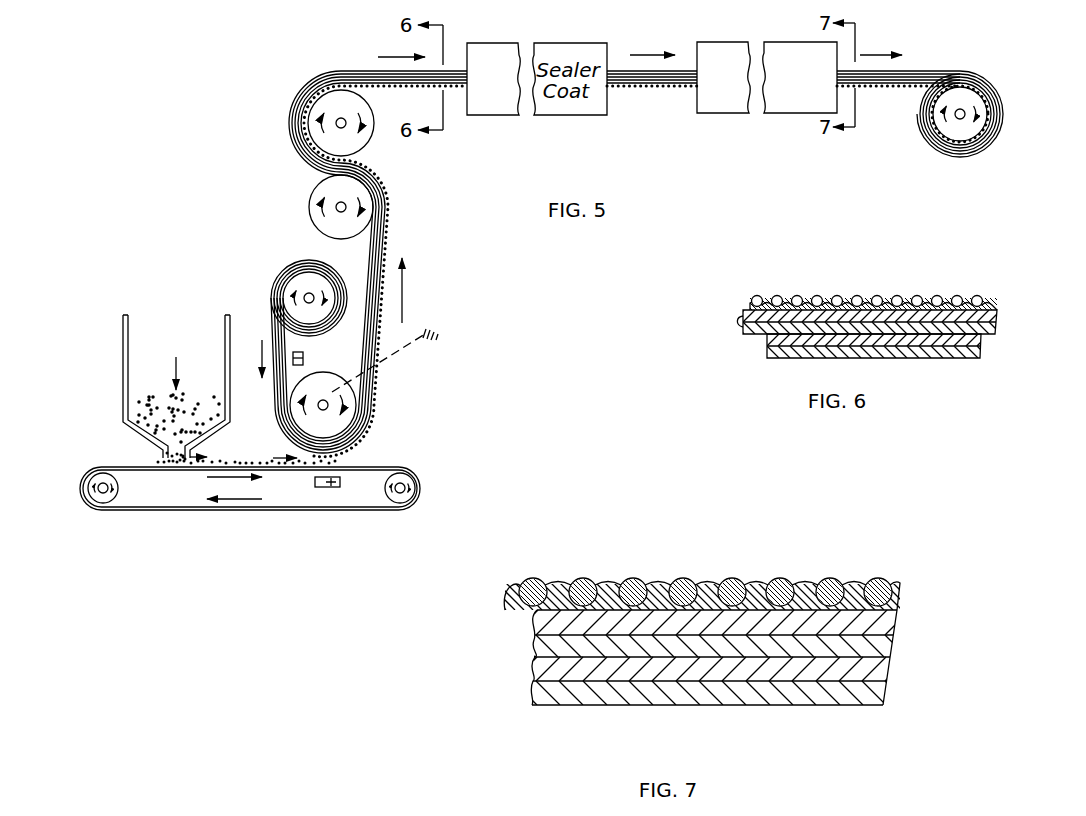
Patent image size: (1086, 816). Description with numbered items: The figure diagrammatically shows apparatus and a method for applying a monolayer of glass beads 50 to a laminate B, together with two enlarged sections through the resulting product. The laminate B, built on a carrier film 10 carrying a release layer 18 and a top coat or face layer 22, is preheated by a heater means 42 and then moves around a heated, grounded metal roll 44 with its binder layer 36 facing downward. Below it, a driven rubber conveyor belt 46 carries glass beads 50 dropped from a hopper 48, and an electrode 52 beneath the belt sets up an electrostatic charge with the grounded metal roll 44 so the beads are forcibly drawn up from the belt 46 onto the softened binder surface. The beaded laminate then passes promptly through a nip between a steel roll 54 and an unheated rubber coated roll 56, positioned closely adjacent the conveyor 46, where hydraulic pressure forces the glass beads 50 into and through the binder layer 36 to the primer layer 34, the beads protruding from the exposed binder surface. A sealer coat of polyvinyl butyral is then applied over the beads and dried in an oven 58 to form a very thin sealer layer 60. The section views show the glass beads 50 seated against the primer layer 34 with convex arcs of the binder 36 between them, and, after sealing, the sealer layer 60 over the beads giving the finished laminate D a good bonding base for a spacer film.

In FIG. 6, the carrier film 10 is at (958, 358).
In FIG. 7, the carrier film 10 is at (875, 706).
In FIG. 7, the release layer 18 is at (897, 668).
In FIG. 7, the top coat or face layer 22 is at (535, 656).
In FIG. 6, the primer layer 34 is at (1000, 318).
In FIG. 7, the primer layer 34 is at (520, 621).
In FIG. 6, the binder layer 36 is at (856, 298).
In FIG. 5, the heater means 42 is at (303, 355).
In FIG. 5, the metal roll 44 is at (348, 377).
In FIG. 5, the rubber conveyor belt 46 is at (207, 511).
In FIG. 5, the hopper 48 is at (123, 370).
In FIG. 5, the glass beads 50 is at (234, 465).
In FIG. 6, the glass beads 50 is at (942, 298).
In FIG. 7, the glass beads 50 is at (633, 580).
In FIG. 5, the electrode 52 is at (340, 484).
In FIG. 5, the steel roll 54 is at (311, 192).
In FIG. 5, the rubber coated roll 56 is at (371, 141).
In FIG. 5, the oven 58 is at (732, 114).
In FIG. 5, the sealer layer 60 is at (957, 71).
In FIG. 7, the sealer layer 60 is at (833, 580).
In FIG. 5, the laminate B is at (270, 297).
In FIG. 7, the laminate D is at (916, 621).